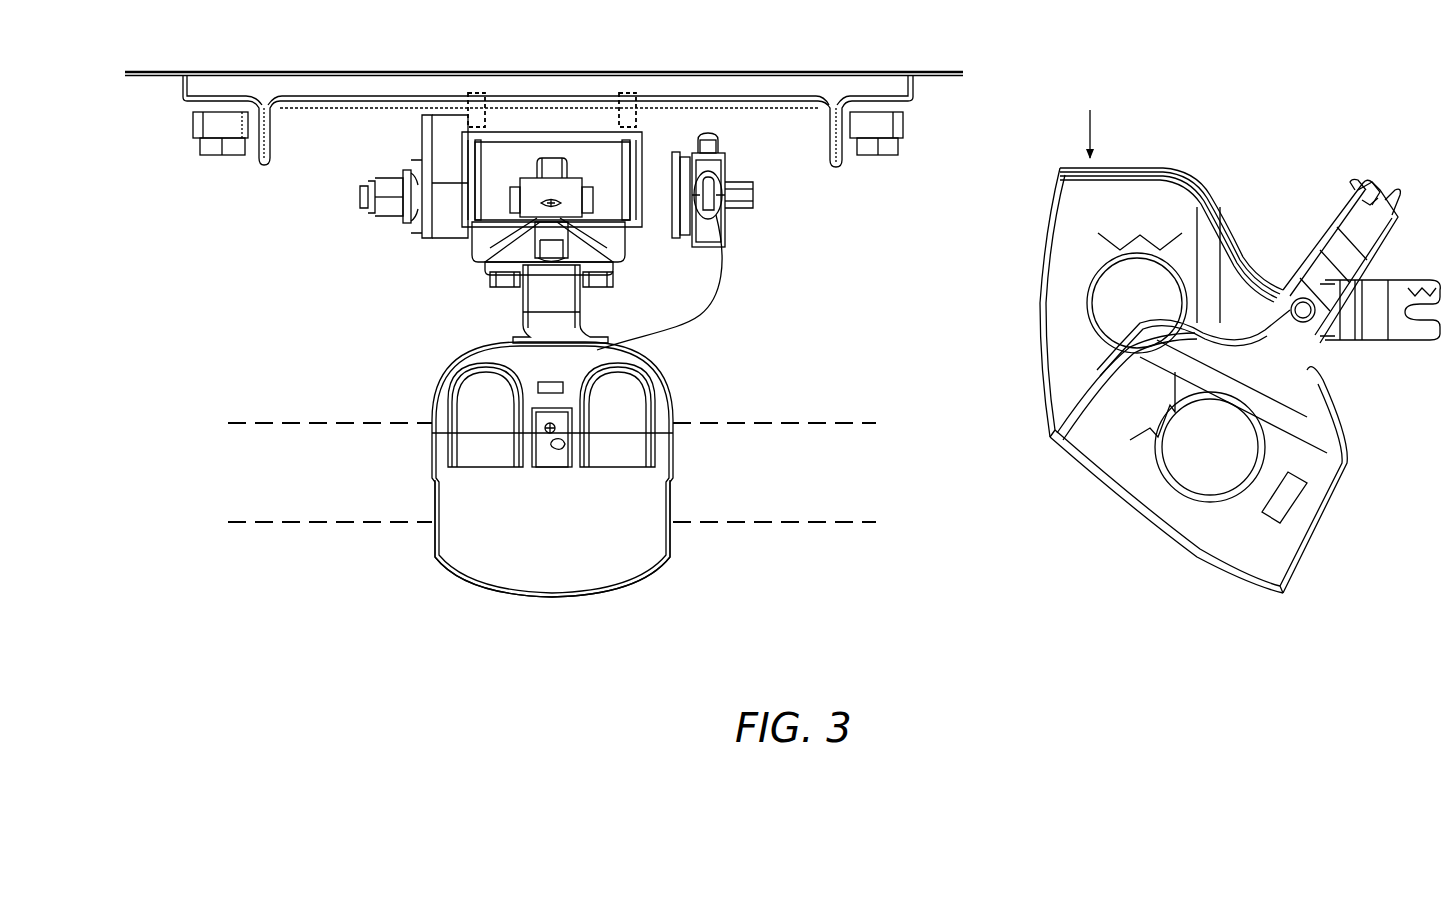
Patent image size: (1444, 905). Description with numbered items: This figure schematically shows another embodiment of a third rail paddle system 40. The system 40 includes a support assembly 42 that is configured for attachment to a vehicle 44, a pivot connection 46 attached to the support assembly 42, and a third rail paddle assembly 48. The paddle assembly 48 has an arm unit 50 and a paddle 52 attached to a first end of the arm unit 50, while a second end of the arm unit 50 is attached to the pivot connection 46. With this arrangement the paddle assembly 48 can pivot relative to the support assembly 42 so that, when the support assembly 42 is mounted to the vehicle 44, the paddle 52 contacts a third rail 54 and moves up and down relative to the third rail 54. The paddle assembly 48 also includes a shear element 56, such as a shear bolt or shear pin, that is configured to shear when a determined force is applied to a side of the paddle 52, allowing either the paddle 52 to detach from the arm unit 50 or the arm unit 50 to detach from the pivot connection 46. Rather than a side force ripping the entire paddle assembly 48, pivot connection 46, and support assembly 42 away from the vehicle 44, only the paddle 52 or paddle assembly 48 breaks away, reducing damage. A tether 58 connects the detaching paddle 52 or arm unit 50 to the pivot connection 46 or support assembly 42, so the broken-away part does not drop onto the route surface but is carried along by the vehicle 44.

The system 40 is at (1352, 118).
The support assembly 42 is at (802, 187).
The vehicle 44 is at (738, 70).
The pivot connection 46 is at (350, 237).
The third rail paddle assembly 48 is at (712, 392).
The arm unit 50 is at (468, 308).
The paddle 52 is at (548, 553).
The third rail 54 is at (753, 524).
The shear element 56 is at (1420, 270).
The tether 58 is at (722, 278).